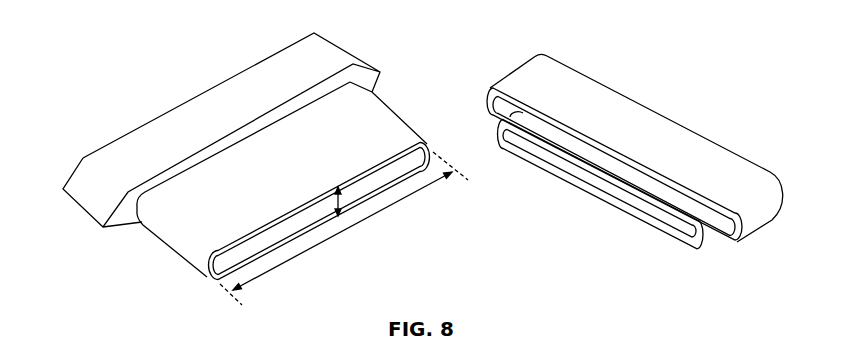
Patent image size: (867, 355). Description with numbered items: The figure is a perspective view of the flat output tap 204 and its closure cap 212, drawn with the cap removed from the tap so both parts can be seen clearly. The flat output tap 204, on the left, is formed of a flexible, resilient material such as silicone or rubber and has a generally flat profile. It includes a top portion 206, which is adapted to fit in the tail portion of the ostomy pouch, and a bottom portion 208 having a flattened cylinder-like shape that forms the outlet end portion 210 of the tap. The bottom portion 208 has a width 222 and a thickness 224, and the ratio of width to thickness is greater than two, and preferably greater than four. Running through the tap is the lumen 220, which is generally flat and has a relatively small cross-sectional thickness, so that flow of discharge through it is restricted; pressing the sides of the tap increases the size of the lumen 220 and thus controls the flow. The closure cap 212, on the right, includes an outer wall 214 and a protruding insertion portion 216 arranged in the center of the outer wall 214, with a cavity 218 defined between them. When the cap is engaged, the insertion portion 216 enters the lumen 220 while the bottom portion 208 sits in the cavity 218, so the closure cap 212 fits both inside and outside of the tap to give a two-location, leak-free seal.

The flat output tap 204 is at (375, 113).
The top portion 206 is at (86, 171).
The bottom portion 208 is at (188, 228).
The outlet end portion 210 is at (351, 168).
The closure cap 212 is at (593, 100).
The outer wall 214 is at (753, 180).
The insertion portion 216 is at (530, 127).
The cavity 218 is at (737, 242).
The lumen 220 is at (297, 227).
The width 222 is at (343, 231).
The thickness 224 is at (325, 198).